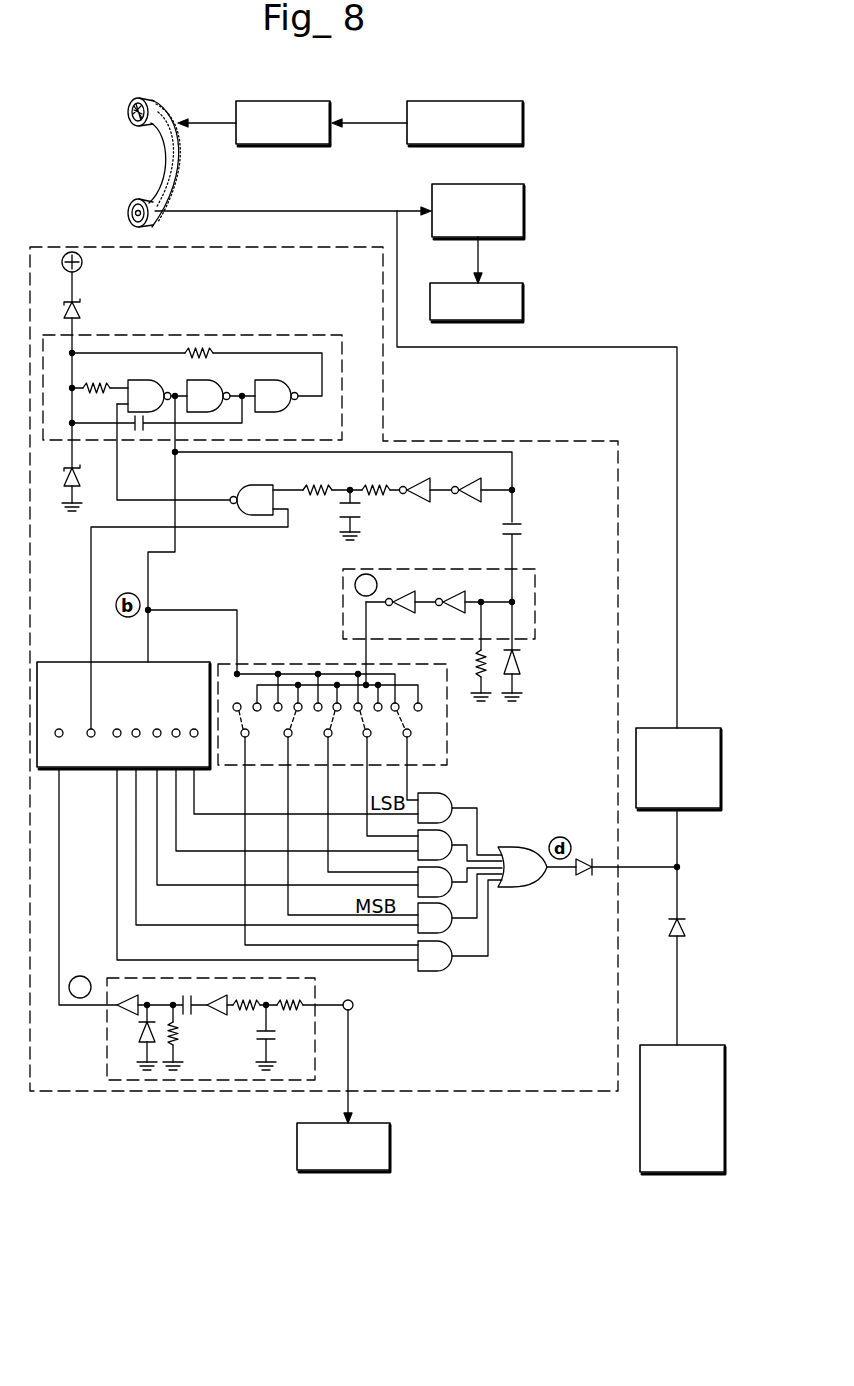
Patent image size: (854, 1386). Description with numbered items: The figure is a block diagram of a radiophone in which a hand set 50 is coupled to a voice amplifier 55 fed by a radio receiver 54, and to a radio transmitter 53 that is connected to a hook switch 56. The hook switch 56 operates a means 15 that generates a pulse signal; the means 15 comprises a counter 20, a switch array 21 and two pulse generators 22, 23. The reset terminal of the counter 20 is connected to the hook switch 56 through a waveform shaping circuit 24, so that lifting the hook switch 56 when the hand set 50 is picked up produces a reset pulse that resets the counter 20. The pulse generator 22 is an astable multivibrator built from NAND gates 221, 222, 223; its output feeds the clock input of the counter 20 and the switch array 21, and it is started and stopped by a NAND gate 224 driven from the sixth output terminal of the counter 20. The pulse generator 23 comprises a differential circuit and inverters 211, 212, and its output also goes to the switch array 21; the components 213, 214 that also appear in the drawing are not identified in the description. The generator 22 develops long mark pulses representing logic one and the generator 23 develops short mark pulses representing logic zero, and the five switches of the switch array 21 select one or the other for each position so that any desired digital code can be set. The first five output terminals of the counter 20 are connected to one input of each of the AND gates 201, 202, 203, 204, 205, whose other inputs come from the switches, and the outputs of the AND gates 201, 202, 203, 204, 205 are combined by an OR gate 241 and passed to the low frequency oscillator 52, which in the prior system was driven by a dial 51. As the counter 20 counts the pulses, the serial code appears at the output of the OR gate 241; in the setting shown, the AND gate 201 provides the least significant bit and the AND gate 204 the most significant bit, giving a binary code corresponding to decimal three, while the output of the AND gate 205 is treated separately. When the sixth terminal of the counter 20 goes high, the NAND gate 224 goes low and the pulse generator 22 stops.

The hand set 50 is at (150, 96).
The voice amplifier 55 is at (290, 100).
The radio receiver 54 is at (431, 100).
The radio transmitter 53 is at (527, 203).
The hook switch 56 is at (513, 294).
The means which generates a pulse signal 15 is at (437, 437).
The pulse generator 22 is at (192, 363).
The NAND gate 221 is at (146, 387).
The NAND gate 222 is at (200, 387).
The NAND gate 223 is at (270, 387).
The NAND gate 224 is at (260, 488).
The inverter 213 is at (412, 504).
The inverter 214 is at (468, 504).
The pulse generator 23 is at (466, 635).
The inverter 211 is at (413, 609).
The inverter 212 is at (447, 599).
The counter 20 is at (62, 661).
The switch array 21 is at (272, 661).
The AND gate 201 is at (420, 800).
The AND gate 202 is at (445, 843).
The AND gate 203 is at (456, 886).
The AND gate 204 is at (456, 922).
The AND gate 205 is at (448, 962).
The OR gate 241 is at (525, 850).
The waveform shaping circuit 24 is at (328, 1003).
The low frequency oscillator 52 is at (652, 725).
The dial 51 is at (640, 1121).